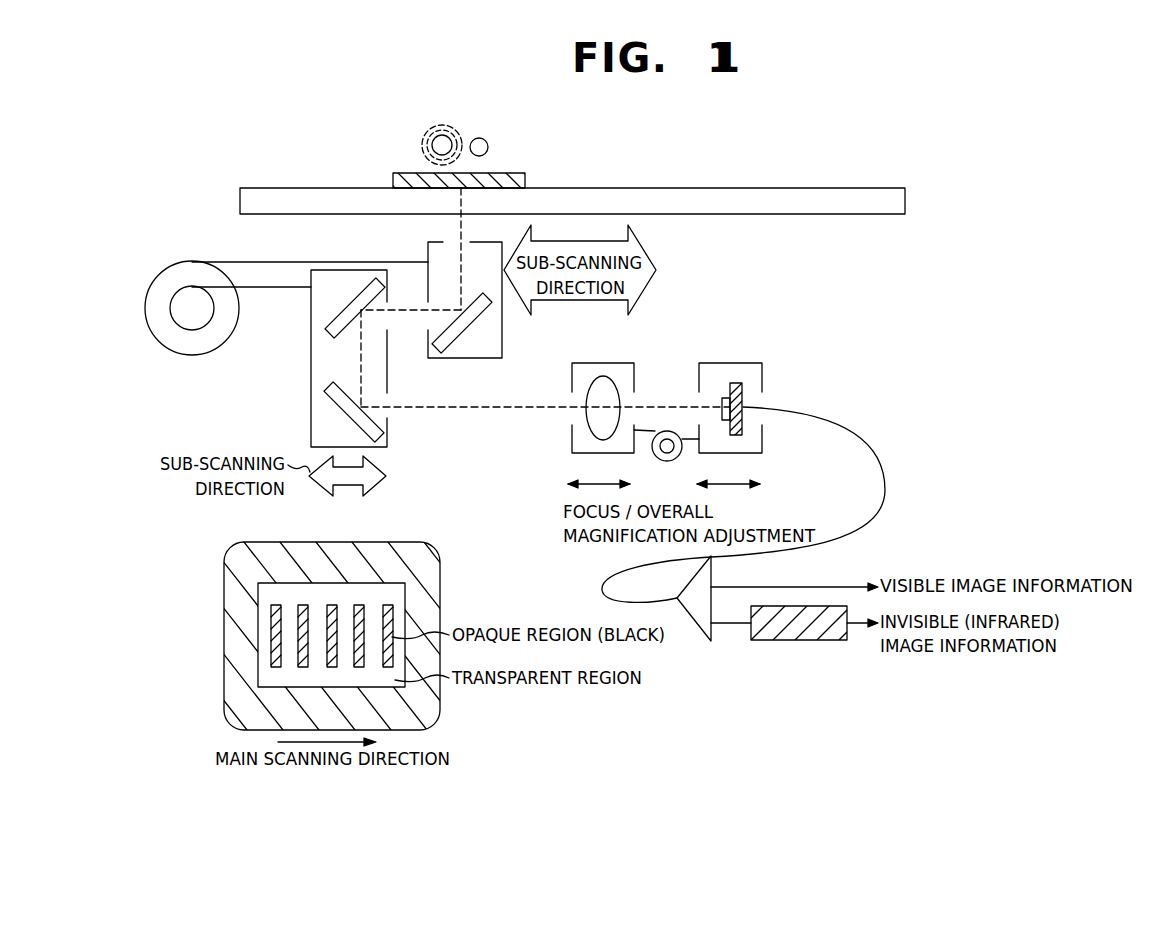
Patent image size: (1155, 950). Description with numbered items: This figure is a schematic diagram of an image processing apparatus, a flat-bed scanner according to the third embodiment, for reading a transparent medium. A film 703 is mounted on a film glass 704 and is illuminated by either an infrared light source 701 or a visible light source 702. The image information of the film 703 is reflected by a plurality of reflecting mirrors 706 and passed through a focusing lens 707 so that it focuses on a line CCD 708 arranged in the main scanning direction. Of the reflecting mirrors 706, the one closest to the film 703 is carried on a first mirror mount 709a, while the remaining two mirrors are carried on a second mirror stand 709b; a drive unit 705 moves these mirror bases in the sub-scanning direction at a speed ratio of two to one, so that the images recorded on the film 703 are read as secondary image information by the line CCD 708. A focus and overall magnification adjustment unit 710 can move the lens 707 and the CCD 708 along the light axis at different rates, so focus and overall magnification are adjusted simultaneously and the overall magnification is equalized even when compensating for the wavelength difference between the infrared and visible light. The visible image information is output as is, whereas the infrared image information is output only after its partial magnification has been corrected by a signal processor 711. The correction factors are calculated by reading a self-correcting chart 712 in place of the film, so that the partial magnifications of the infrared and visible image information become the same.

The infrared light source 701 is at (442, 125).
The visible light source 702 is at (483, 138).
The film 703 is at (513, 173).
The film glass 704 is at (605, 188).
The drive unit 705 is at (188, 355).
The reflecting mirrors 706 is at (330, 332).
The focusing lens 707 is at (572, 437).
The line CCD 708 is at (730, 363).
The first mirror mount 709a is at (502, 353).
The second mirror stand 709b is at (388, 445).
The focus and overall magnification adjustment unit 710 is at (667, 461).
The signal processor 711 is at (800, 656).
The self-correcting chart 712 is at (440, 566).